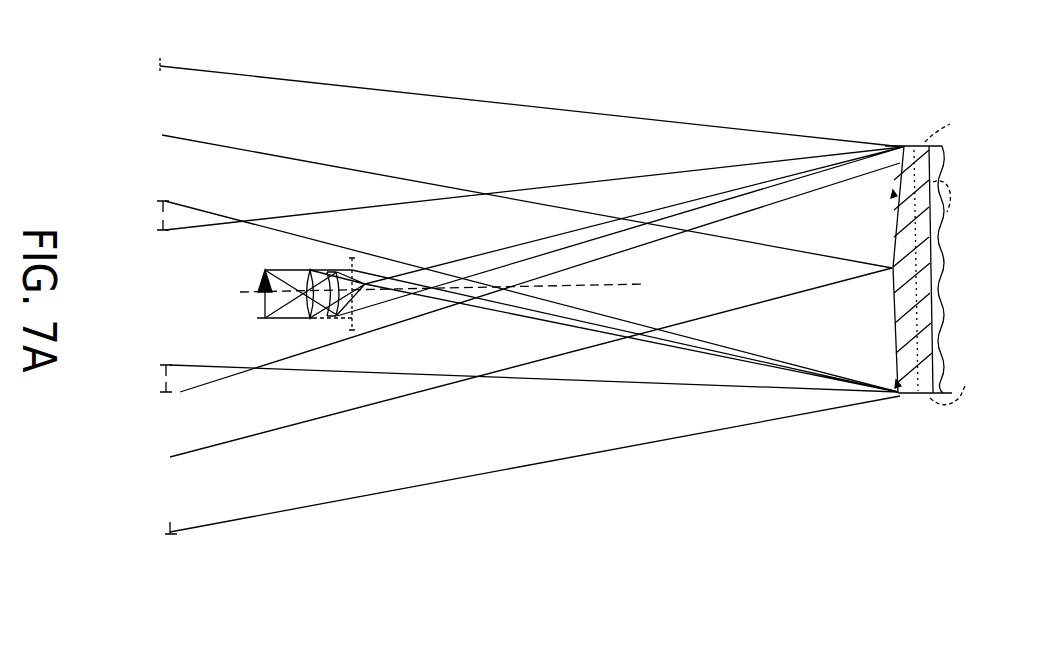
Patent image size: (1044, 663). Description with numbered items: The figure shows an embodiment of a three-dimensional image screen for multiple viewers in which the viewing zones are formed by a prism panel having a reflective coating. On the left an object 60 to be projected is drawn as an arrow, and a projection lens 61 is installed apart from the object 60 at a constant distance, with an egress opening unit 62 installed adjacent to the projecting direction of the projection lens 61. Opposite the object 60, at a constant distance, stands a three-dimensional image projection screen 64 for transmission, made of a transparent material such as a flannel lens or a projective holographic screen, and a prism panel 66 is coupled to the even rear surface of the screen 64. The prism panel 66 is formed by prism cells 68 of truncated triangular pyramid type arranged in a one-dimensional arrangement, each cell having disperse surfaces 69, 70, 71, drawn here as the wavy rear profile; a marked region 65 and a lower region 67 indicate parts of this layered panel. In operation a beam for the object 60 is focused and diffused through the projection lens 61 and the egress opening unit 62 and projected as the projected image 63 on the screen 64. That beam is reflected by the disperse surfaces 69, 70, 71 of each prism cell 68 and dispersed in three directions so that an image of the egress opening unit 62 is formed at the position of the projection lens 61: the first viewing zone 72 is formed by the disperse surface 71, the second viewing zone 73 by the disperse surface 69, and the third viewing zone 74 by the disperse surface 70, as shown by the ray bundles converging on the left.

The object 60 is at (256, 274).
The projection lens 61 is at (306, 268).
The egress opening unit 62 is at (336, 321).
The projected image 63 is at (893, 146).
The 3-dimensional image projection screen 64 is at (896, 200).
The transparent plate 65 is at (948, 125).
The prism panel 66 is at (949, 292).
The diffusing surface 67 is at (949, 333).
The prism cell 68 is at (951, 176).
The disperse surface 69 is at (949, 191).
The disperse surface 70 is at (948, 198).
The disperse surface 71 is at (948, 213).
The first viewing zone 72 is at (505, 195).
The second viewing zone 73 is at (517, 269).
The third viewing zone 74 is at (511, 369).